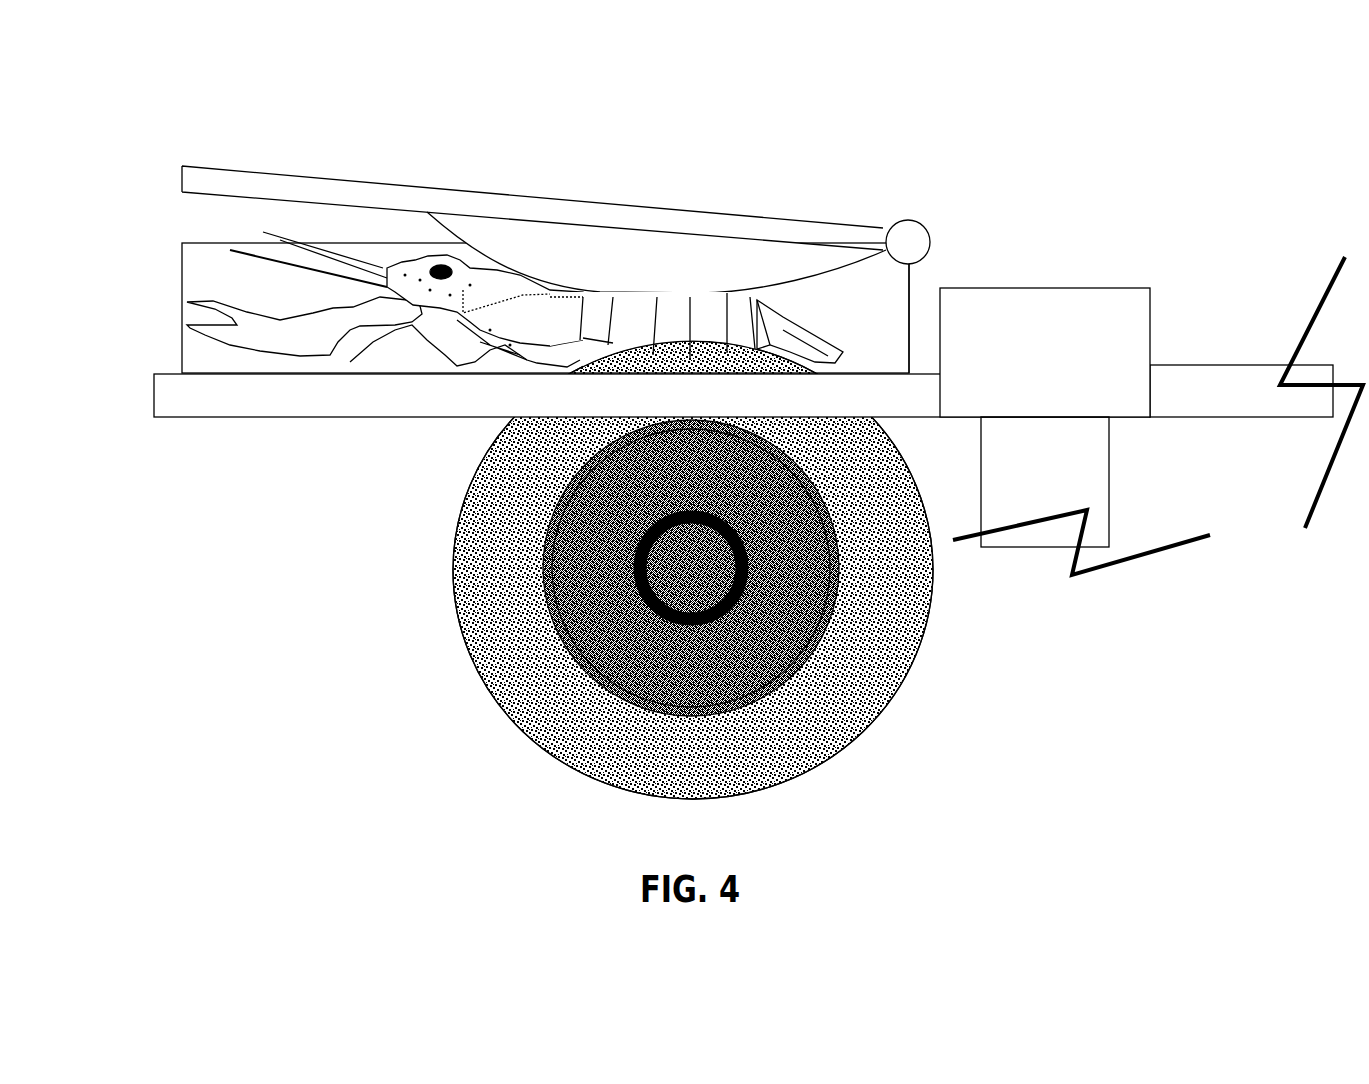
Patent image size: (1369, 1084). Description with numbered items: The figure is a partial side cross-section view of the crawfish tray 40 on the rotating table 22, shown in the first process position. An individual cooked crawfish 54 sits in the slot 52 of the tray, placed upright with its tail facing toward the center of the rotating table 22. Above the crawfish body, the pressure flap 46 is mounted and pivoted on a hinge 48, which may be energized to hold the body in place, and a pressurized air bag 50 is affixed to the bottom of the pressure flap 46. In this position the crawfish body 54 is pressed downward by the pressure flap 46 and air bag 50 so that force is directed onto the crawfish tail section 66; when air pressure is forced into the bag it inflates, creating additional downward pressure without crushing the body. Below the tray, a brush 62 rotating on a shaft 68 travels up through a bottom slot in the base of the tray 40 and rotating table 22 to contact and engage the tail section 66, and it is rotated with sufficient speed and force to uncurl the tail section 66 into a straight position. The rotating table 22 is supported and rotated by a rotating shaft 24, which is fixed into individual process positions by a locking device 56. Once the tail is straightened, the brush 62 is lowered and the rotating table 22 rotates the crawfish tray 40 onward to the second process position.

The rotating table 22 is at (195, 422).
The rotating shaft 24 is at (1120, 478).
The crawfish tray 40 is at (701, 447).
The pressure flap 46 is at (453, 183).
The hinge 48 is at (943, 236).
The pressurized air bag 50 is at (647, 250).
The slot 52 is at (167, 317).
The cooked crawfish 54 is at (547, 315).
The locking device 56 is at (1072, 277).
The brush 62 is at (627, 570).
The tail section 66 is at (757, 303).
The shaft 68 is at (686, 577).